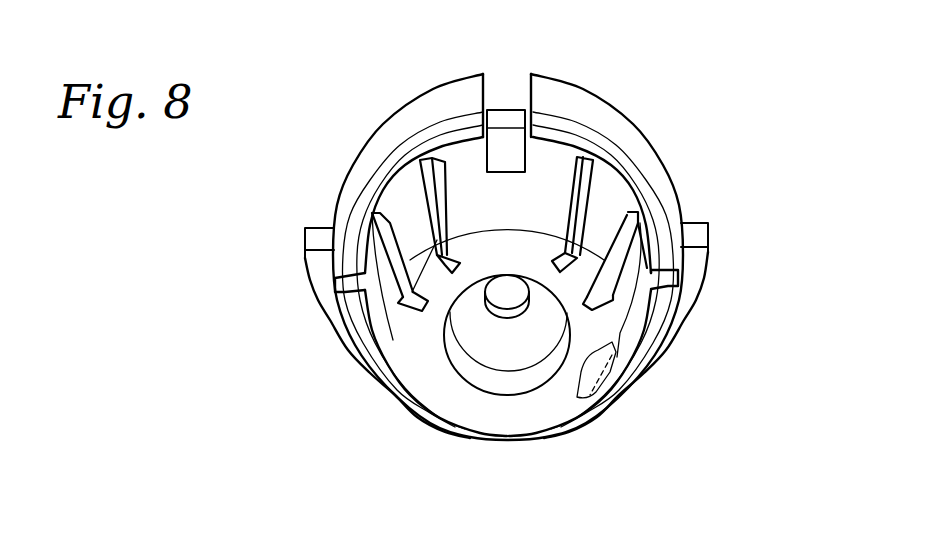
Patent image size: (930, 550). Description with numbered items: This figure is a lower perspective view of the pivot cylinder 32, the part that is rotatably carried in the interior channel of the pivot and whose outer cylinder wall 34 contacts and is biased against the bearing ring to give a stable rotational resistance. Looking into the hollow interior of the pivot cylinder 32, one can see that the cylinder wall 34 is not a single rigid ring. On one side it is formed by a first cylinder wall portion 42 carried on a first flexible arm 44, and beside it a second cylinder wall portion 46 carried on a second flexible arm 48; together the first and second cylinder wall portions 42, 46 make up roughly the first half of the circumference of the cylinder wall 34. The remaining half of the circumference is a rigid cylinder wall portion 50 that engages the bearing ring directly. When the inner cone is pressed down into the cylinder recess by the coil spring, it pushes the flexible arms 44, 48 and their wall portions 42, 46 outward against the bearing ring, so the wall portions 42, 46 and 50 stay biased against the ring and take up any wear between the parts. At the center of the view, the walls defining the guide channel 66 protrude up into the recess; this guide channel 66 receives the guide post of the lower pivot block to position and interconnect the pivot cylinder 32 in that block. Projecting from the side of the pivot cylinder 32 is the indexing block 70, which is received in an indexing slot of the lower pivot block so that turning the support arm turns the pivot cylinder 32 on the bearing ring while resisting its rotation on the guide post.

The pivot cylinder 32 is at (563, 412).
The cylinder wall 34 is at (333, 263).
The first cylinder wall portion 42 is at (632, 132).
The first flexible arm 44 is at (607, 217).
The second cylinder wall portion 46 is at (395, 135).
The second flexible arm 48 is at (403, 213).
The rigid cylinder wall portion 50 is at (677, 300).
The guide channel 66 is at (510, 360).
The indexing block 70 is at (505, 112).